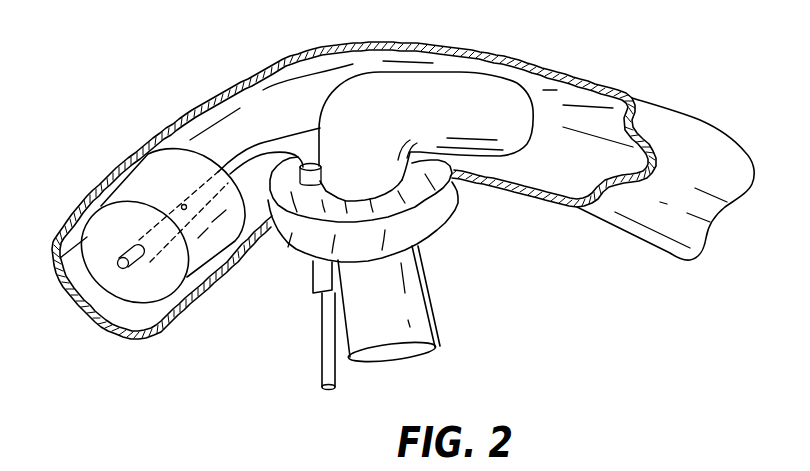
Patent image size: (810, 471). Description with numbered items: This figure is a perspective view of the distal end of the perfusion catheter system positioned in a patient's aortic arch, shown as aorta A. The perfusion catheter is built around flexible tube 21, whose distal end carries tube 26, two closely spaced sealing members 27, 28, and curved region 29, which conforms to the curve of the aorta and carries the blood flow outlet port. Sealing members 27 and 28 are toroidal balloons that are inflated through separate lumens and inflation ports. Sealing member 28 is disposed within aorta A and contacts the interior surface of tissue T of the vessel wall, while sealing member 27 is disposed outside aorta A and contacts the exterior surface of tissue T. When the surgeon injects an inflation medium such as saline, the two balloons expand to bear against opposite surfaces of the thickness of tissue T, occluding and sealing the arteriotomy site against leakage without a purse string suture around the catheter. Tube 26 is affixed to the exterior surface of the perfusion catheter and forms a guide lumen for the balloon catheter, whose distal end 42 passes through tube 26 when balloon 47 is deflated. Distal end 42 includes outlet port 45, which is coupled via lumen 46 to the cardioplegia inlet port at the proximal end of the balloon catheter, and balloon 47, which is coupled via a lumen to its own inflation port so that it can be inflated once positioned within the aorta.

The flexible tube 21 is at (410, 293).
The tube 26 is at (313, 283).
The sealing member 27 is at (410, 228).
The sealing member 28 is at (422, 193).
The curved region 29 is at (477, 92).
The distal end 42 is at (242, 153).
The outlet port 45 is at (123, 267).
The lumen 46 is at (330, 392).
The balloon 47 is at (137, 190).
The aorta A is at (700, 133).
The tissue T is at (530, 183).